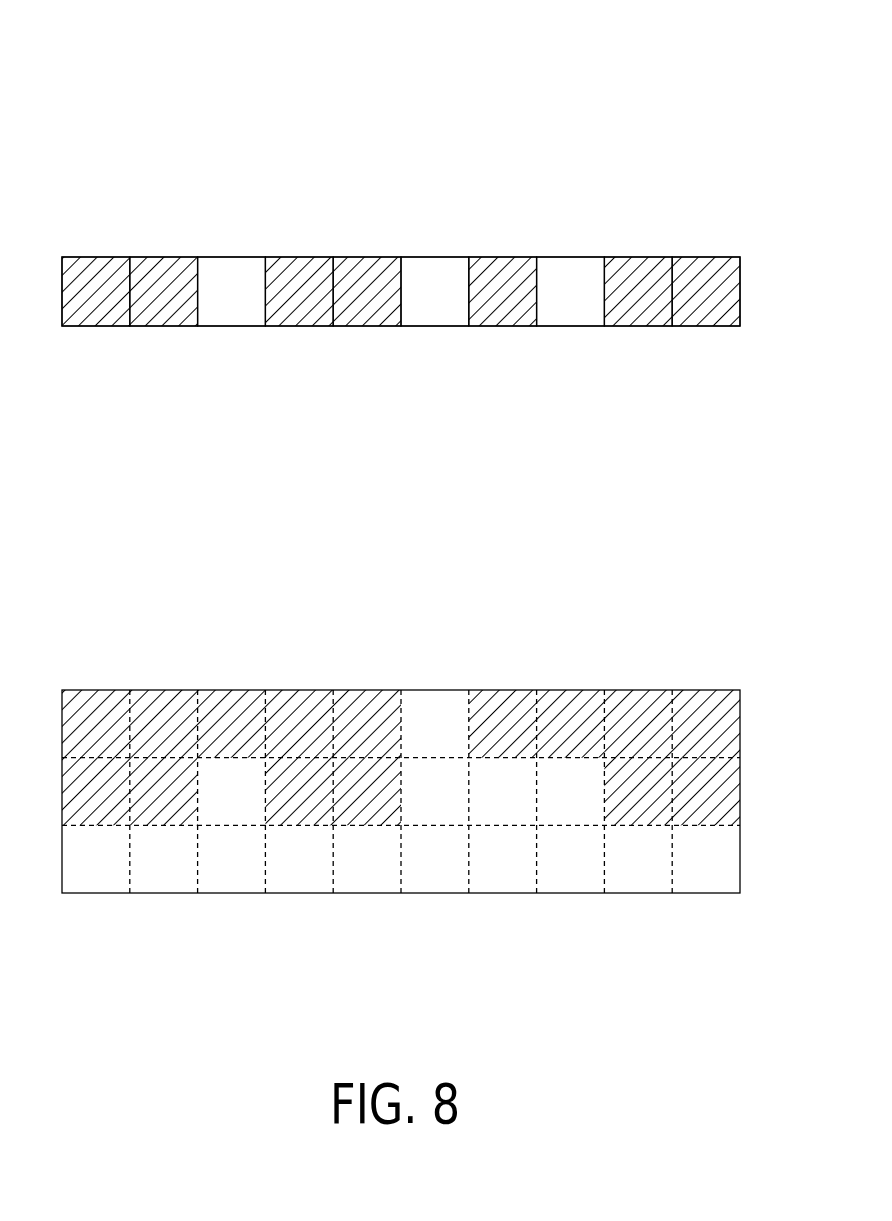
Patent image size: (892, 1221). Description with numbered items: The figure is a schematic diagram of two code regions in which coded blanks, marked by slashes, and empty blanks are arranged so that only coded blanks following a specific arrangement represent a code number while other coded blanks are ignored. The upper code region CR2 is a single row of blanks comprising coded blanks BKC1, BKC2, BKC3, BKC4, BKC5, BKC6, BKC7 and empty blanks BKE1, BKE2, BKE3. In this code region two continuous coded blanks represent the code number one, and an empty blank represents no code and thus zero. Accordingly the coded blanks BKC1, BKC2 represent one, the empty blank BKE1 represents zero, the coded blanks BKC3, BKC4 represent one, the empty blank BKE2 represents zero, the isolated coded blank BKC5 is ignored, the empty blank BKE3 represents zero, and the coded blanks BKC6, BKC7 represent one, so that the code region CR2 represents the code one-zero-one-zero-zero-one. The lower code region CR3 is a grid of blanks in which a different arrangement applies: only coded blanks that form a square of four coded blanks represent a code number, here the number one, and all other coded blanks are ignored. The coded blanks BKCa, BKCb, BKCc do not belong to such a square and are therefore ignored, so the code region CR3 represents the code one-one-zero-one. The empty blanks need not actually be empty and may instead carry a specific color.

The code region CR2 is at (683, 88).
The code region CR3 is at (683, 558).
The coded blank BKC1 is at (100, 270).
The coded blank BKC2 is at (163, 278).
The coded blank BKC3 is at (298, 278).
The coded blank BKC4 is at (368, 270).
The coded blank BKC5 is at (505, 270).
The coded blank BKC6 is at (640, 270).
The coded blank BKC7 is at (705, 278).
The empty blank BKE1 is at (233, 270).
The empty blank BKE2 is at (433, 278).
The empty blank BKE3 is at (568, 278).
The coded blank BKCa is at (233, 713).
The coded blank BKCb is at (502, 713).
The coded blank BKCc is at (583, 713).